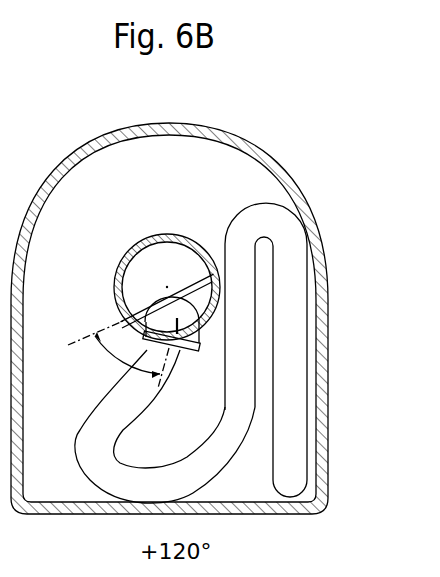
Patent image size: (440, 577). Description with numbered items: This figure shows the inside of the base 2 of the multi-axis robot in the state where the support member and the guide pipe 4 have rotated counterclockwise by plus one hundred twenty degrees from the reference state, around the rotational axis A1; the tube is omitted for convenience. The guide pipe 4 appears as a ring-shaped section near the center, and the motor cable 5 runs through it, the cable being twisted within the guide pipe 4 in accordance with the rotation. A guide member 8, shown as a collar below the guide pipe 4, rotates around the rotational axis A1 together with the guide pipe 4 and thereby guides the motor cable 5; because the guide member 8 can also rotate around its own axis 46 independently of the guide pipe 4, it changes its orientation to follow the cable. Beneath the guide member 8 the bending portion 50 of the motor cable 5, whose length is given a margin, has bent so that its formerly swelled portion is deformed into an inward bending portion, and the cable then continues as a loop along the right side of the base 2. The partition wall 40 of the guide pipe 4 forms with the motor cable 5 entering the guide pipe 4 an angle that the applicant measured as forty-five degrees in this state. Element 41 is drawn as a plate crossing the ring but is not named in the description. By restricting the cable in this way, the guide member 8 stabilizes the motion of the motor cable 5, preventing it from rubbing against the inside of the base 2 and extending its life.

The base 2 is at (243, 141).
The guide pipe 4 is at (141, 236).
The motor cable 5 is at (287, 239).
The guide member 8 is at (203, 350).
The partition wall 40 is at (136, 284).
The partition plate 41 is at (197, 288).
The axis 46 is at (205, 319).
The bending portion 50 is at (119, 476).
The rotational axis A1 is at (167, 288).